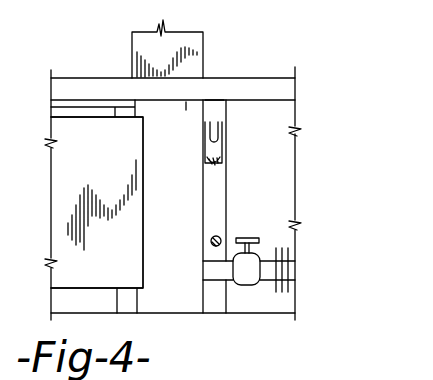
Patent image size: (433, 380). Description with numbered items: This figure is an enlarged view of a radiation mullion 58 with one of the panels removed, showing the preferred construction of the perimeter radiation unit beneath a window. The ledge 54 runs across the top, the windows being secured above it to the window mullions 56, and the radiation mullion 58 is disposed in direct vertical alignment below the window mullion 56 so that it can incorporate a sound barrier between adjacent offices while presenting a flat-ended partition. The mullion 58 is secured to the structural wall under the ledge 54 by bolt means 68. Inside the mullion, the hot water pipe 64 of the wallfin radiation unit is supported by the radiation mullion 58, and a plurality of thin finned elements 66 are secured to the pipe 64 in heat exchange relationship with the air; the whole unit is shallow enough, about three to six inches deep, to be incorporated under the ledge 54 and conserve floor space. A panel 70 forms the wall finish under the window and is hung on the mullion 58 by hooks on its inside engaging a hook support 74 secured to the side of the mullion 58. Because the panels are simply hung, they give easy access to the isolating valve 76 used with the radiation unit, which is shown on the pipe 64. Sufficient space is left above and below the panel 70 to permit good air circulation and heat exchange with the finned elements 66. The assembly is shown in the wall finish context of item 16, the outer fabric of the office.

The housing 16 is at (180, 311).
The ledge 54 is at (90, 85).
The window mullion 56 is at (205, 38).
The radiation mullion 58 is at (183, 107).
The hot water pipe 64 is at (268, 270).
The finned elements 66 is at (283, 246).
The bolt means 68 is at (210, 240).
The panel 70 is at (95, 163).
The hook support 74 is at (224, 133).
The valve 76 is at (247, 277).